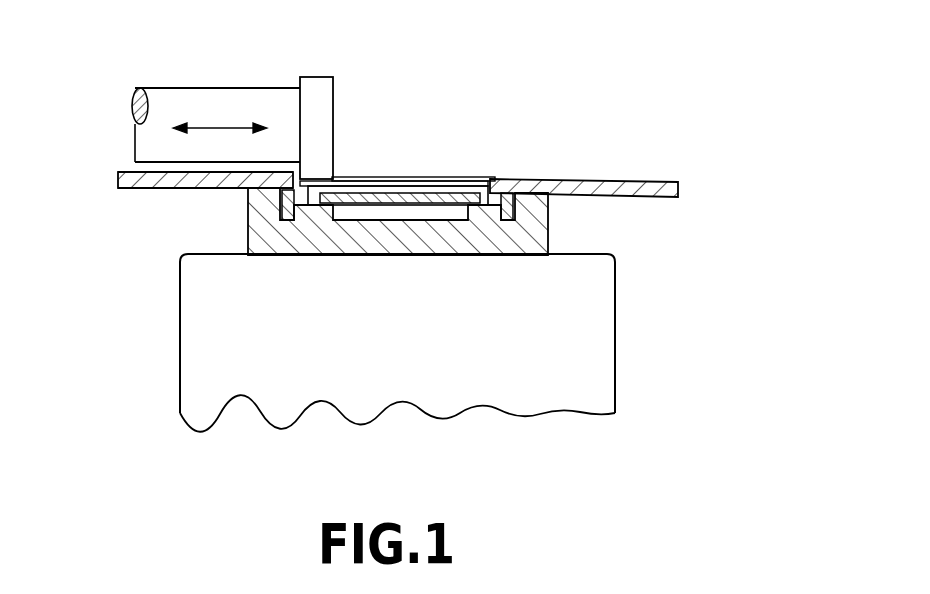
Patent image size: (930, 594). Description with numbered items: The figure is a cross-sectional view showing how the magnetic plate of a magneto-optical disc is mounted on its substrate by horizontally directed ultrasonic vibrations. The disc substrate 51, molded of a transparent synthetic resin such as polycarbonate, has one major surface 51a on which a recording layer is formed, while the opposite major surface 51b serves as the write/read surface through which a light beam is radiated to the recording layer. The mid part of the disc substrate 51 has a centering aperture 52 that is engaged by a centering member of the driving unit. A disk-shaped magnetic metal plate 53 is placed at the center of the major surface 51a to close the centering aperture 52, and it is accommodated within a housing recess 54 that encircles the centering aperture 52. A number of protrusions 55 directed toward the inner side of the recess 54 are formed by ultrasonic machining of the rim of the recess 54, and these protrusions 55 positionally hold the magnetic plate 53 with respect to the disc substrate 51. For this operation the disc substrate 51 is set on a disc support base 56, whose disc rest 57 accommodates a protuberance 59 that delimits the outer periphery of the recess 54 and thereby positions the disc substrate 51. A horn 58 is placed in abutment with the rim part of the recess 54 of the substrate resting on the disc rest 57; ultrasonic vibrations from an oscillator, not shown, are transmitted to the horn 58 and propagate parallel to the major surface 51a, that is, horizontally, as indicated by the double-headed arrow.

The disc substrate 51 is at (637, 182).
The major surface 51a is at (127, 171).
The major surface 51b is at (130, 190).
The centering aperture 52 is at (440, 205).
The magnetic metal plate 53 is at (412, 197).
The housing recess 54 is at (308, 192).
The protrusions 55 is at (336, 178).
The disc support base 56 is at (607, 333).
The disc rest 57 is at (537, 228).
The horn 58 is at (235, 100).
The protuberance 59 is at (496, 208).